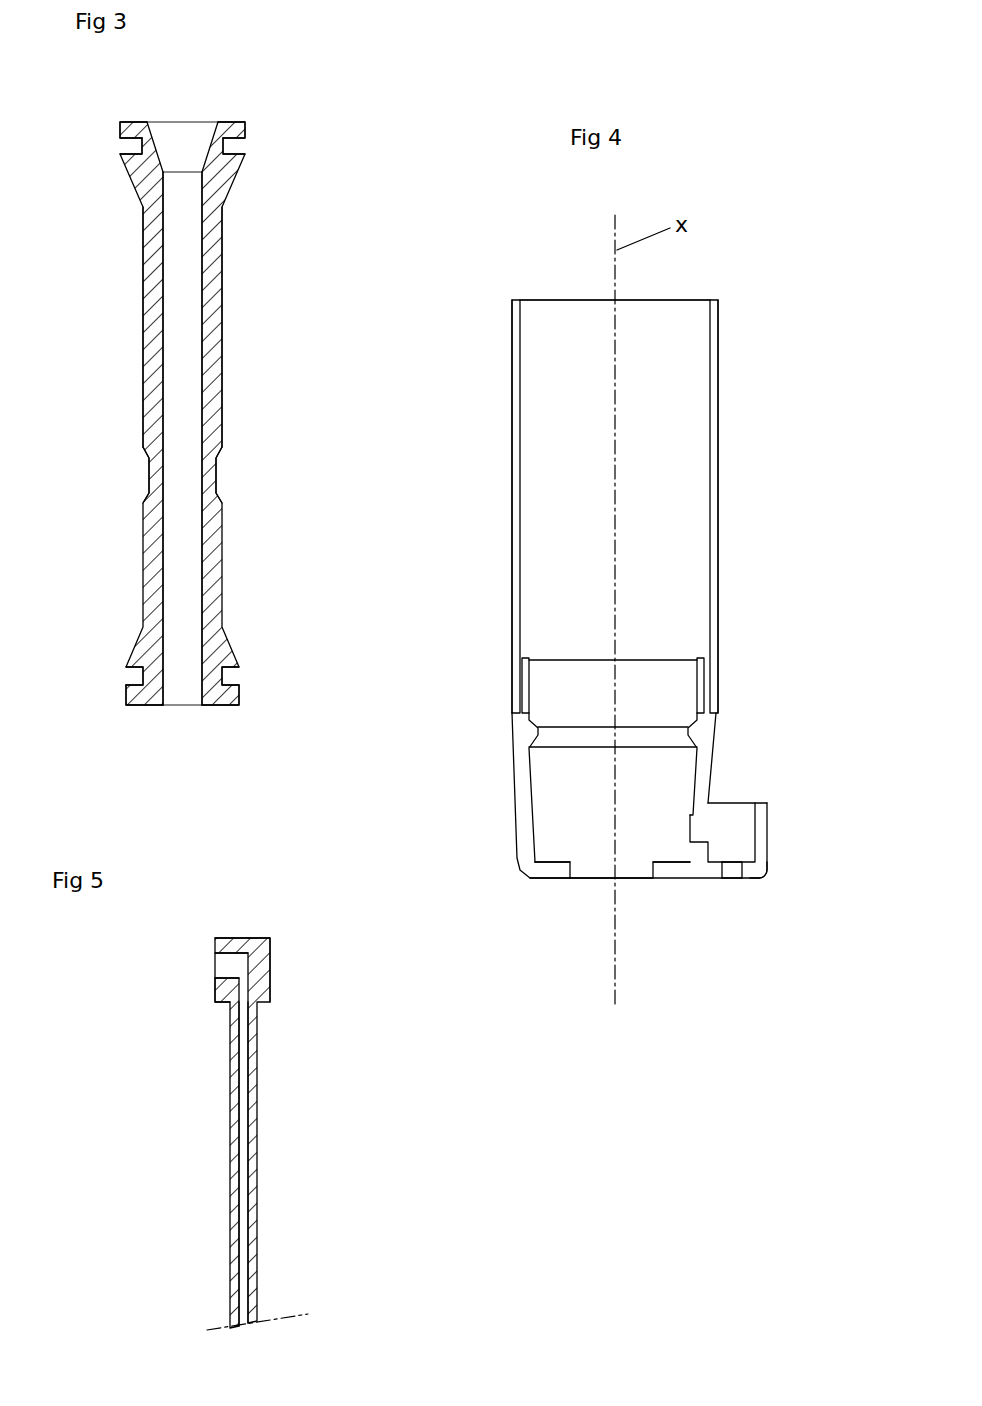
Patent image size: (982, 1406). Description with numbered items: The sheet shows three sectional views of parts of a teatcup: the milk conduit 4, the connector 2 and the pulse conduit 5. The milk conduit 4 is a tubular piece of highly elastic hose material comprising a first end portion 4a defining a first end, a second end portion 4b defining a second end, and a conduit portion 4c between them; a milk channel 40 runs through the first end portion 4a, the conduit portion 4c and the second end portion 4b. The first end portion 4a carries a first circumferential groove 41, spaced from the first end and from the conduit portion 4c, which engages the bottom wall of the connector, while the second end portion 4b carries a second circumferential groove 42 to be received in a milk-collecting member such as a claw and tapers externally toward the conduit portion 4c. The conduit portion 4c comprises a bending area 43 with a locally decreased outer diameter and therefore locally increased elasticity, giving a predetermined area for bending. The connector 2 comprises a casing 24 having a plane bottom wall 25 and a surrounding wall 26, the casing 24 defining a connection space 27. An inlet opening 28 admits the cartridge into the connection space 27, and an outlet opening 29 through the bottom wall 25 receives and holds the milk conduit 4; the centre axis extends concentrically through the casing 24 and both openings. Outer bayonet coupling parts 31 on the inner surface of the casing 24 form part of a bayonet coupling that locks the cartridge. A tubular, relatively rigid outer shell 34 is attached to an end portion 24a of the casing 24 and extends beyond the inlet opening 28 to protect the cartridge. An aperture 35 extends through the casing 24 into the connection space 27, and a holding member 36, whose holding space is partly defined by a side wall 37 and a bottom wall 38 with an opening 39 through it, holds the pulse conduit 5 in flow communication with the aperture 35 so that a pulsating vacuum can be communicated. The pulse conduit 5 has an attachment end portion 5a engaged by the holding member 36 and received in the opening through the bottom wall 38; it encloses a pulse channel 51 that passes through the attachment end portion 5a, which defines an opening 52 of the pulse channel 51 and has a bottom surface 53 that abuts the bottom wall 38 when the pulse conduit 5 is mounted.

In FIG. 4, the connector 2 is at (498, 333).
In FIG. 3, the milk conduit 4 is at (220, 257).
In FIG. 3, the first end portion 4a is at (120, 133).
In FIG. 3, the second end portion 4b is at (128, 701).
In FIG. 3, the conduit portion 4c is at (148, 343).
In FIG. 3, the milk channel 40 is at (195, 362).
In FIG. 3, the first circumferential groove 41 is at (136, 152).
In FIG. 3, the second circumferential groove 42 is at (135, 680).
In FIG. 3, the bending area 43 is at (149, 477).
In FIG. 4, the casing 24 is at (705, 738).
In FIG. 4, the end portion 24a is at (703, 686).
In FIG. 4, the bottom wall 25 is at (552, 878).
In FIG. 4, the surrounding wall 26 is at (520, 813).
In FIG. 4, the connection space 27 is at (653, 827).
In FIG. 4, the inlet opening 28 is at (640, 663).
In FIG. 4, the outlet opening 29 is at (627, 880).
In FIG. 4, the outer bayonet coupling parts 31 is at (690, 750).
In FIG. 4, the outer shell 34 is at (716, 567).
In FIG. 4, the aperture 35 is at (698, 828).
In FIG. 4, the holding member 36 is at (767, 803).
In FIG. 4, the side wall 37 is at (762, 835).
In FIG. 4, the bottom wall 38 is at (750, 875).
In FIG. 4, the opening 39 is at (738, 868).
In FIG. 5, the pulse conduit 5 is at (262, 1160).
In FIG. 5, the attachment end portion 5a is at (270, 964).
In FIG. 5, the pulse channel 51 is at (246, 1110).
In FIG. 5, the opening 52 is at (224, 967).
In FIG. 5, the bottom surface 53 is at (222, 1001).